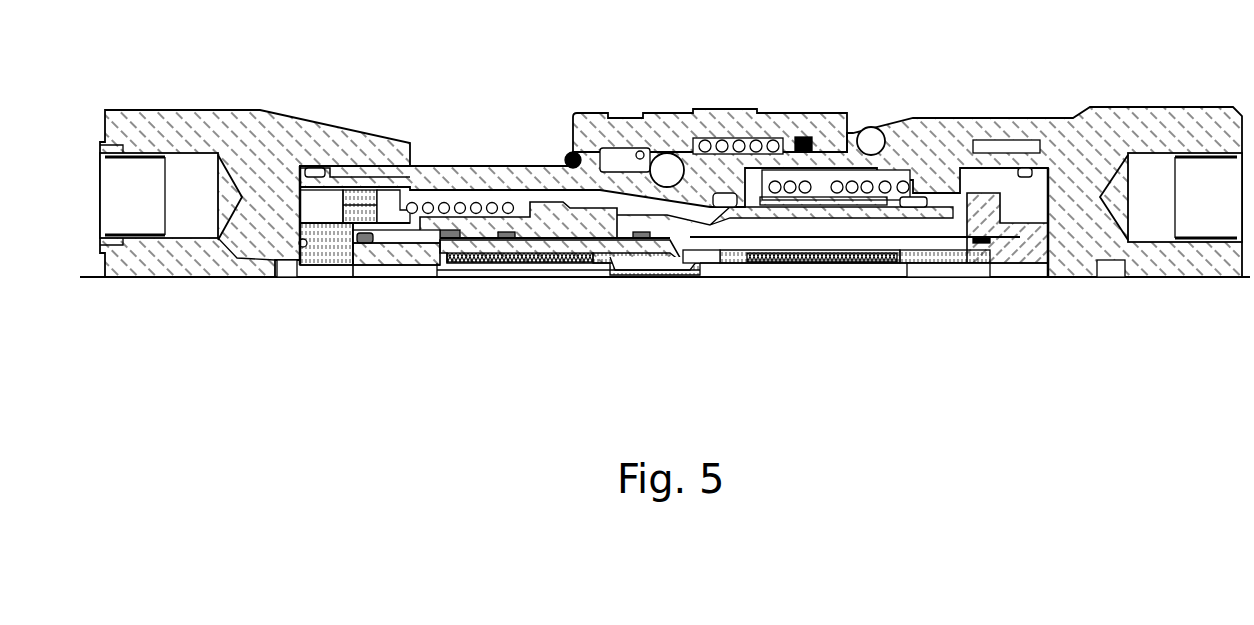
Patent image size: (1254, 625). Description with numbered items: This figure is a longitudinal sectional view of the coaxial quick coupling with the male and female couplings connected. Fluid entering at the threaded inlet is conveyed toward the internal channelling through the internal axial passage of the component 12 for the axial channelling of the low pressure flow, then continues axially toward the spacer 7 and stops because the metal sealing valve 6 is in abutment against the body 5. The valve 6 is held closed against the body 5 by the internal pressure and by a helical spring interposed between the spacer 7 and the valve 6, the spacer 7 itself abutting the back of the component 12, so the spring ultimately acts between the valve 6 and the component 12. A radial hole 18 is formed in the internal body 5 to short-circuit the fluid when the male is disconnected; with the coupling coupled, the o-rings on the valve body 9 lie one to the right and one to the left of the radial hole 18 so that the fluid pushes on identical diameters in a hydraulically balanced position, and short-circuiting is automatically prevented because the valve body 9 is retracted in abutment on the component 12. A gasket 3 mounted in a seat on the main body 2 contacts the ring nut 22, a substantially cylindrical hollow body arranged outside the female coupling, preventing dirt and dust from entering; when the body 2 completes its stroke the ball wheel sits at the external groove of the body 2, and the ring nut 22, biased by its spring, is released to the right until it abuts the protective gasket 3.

The main body 2 is at (443, 168).
The gasket 3 is at (572, 155).
The body 5 is at (440, 260).
The metal sealing valve 6 is at (613, 262).
The spacer 7 is at (407, 258).
The valve body 9 is at (567, 253).
The component for axial channelling of the low pressure flow 12 is at (328, 254).
The radial hole 18 is at (482, 257).
The ring nut 22 is at (593, 122).